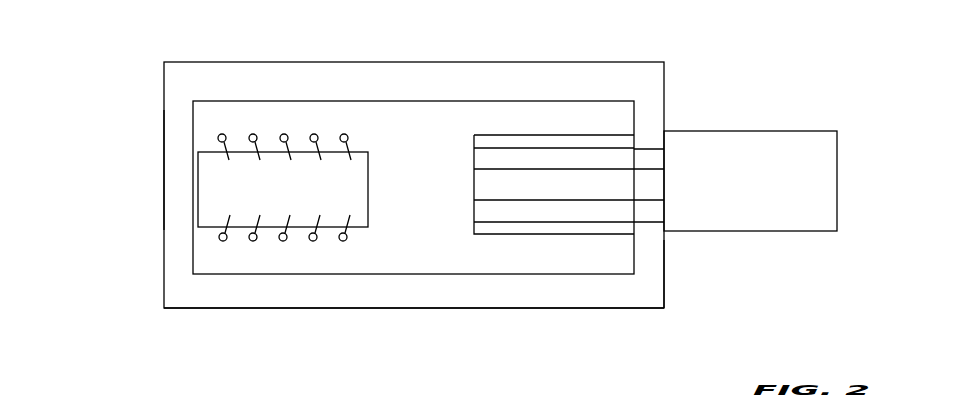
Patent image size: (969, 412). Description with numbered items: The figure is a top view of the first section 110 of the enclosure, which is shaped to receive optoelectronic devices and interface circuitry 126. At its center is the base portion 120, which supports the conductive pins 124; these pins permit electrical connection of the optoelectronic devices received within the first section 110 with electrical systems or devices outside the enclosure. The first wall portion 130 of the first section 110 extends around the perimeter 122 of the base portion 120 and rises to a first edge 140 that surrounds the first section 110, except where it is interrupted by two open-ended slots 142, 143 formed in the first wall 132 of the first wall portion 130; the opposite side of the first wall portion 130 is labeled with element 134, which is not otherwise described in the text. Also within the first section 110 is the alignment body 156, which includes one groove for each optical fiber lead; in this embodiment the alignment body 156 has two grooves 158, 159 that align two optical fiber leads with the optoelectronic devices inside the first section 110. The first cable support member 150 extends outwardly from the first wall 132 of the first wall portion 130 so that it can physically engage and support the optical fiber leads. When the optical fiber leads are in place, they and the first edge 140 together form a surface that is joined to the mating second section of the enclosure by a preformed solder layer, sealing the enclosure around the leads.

The first section 110 is at (98, 52).
The base portion 120 is at (458, 252).
The perimeter 122 is at (178, 181).
The conductive pins 124 is at (225, 134).
The interface circuitry 126 is at (368, 175).
The first wall portion 130 is at (515, 292).
The first wall 132 is at (665, 290).
The side wall 134 is at (163, 138).
The first edge 140 is at (180, 83).
The open-ended slot 142 is at (653, 225).
The open-ended slot 143 is at (653, 147).
The first cable support member 150 is at (735, 130).
The alignment body 156 is at (575, 135).
The groove 158 is at (487, 215).
The groove 159 is at (483, 162).